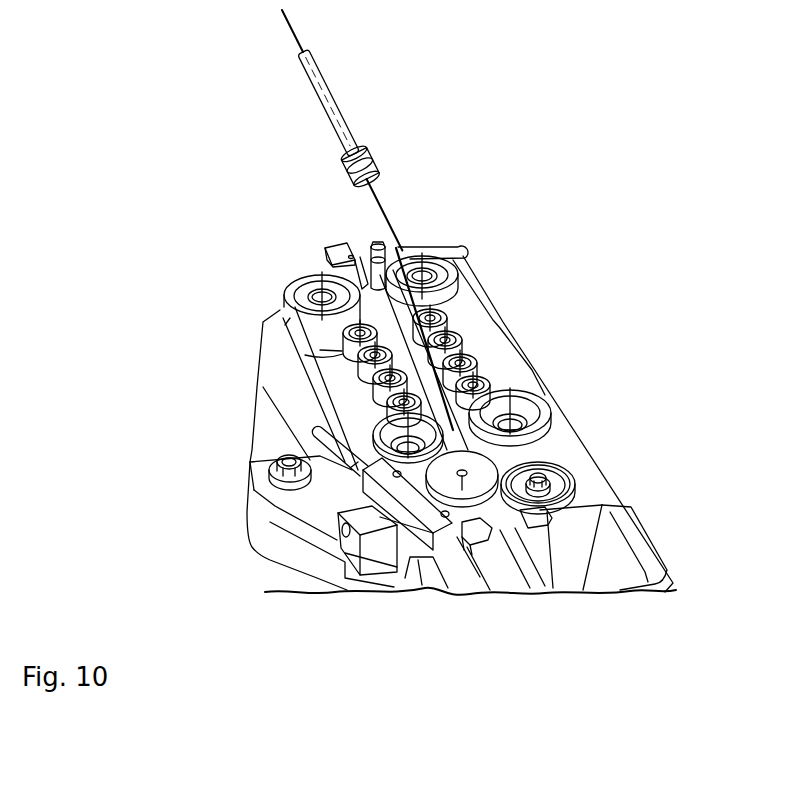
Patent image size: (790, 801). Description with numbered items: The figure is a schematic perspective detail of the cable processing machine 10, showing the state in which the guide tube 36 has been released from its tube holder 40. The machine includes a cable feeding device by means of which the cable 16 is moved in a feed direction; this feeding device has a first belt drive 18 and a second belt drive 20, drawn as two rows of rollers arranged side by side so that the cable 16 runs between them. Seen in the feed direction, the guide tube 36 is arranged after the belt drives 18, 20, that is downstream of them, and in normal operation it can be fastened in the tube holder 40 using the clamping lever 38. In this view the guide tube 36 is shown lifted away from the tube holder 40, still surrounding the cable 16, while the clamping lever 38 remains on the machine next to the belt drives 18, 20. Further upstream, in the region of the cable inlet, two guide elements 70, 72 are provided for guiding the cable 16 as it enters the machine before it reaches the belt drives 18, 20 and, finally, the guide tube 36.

The cable processing machine 10 is at (584, 192).
The cable 16 is at (297, 32).
The first belt drive 18 is at (511, 310).
The second belt drive 20 is at (284, 262).
The guide tube 36 is at (344, 121).
The clamping lever 38 is at (445, 246).
The tube holder 40 is at (353, 243).
The guide element 70 is at (542, 523).
The guide element 72 is at (475, 528).